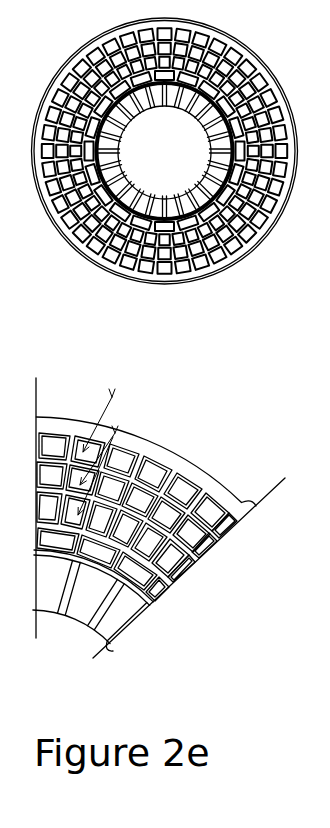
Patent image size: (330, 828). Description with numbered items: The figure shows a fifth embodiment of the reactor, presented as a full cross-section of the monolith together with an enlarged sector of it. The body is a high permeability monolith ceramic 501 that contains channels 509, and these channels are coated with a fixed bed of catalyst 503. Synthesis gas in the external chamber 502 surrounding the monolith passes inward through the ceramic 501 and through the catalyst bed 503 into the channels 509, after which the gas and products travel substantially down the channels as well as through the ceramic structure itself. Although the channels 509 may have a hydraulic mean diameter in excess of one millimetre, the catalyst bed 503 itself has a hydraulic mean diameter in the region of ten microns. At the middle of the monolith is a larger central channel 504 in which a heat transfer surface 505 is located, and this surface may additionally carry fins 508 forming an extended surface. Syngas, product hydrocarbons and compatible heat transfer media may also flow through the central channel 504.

The high permeability monolith ceramic 501 is at (229, 500).
The external chamber 502 is at (195, 439).
The fixed bed of catalyst 503 is at (242, 517).
The central channel 504 is at (133, 605).
The heat transfer surface 505 is at (117, 652).
The fins 508 is at (128, 623).
The channels 509 is at (258, 502).